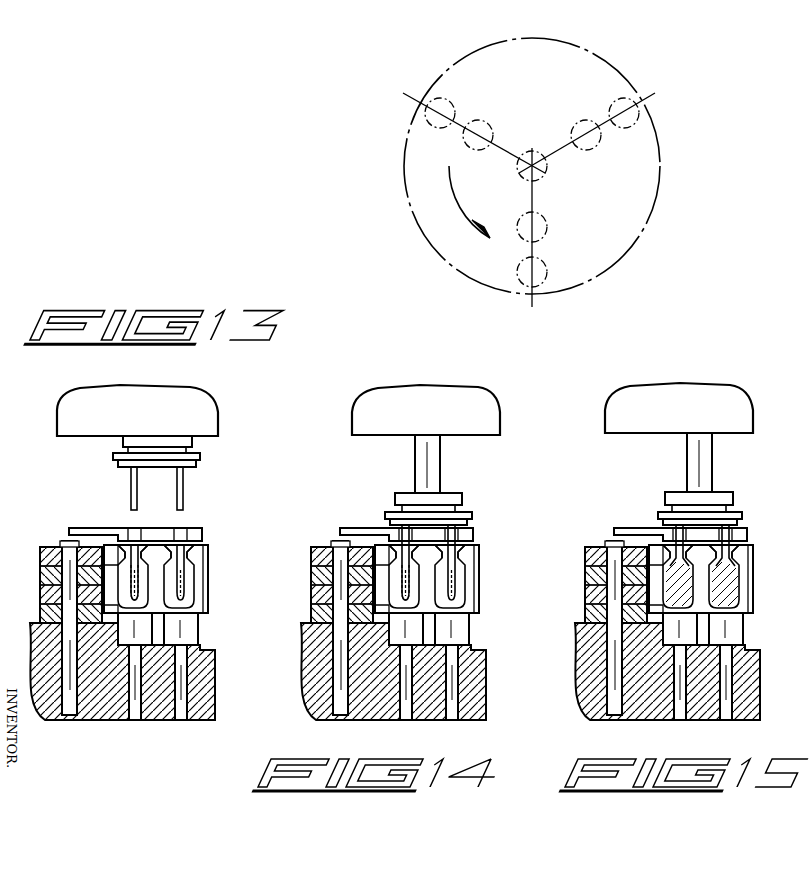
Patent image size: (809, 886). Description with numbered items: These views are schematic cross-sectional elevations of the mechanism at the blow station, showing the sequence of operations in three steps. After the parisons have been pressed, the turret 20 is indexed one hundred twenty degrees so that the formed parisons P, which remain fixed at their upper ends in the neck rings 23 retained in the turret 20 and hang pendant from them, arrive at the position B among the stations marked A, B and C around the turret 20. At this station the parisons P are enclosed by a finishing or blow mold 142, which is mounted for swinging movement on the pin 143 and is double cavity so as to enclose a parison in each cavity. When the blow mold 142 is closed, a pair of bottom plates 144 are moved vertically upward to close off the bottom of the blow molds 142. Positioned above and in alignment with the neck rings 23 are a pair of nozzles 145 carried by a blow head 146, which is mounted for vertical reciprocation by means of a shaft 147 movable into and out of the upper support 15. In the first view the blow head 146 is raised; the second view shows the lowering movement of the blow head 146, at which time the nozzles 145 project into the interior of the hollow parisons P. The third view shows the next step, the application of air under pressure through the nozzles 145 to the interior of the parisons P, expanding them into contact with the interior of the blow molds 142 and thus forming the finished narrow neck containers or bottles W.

In FIG. 13, the upper support 15 is at (206, 407).
In FIG. 14, the upper support 15 is at (482, 407).
In FIG. 15, the upper support 15 is at (745, 360).
In FIG. 14, the shaft 147 is at (437, 461).
In FIG. 15, the shaft 147 is at (711, 458).
In FIG. 13, the blow head 146 is at (116, 458).
In FIG. 14, the blow head 146 is at (469, 513).
In FIG. 15, the blow head 146 is at (741, 513).
In FIG. 13, the nozzles 145 is at (177, 495).
In FIG. 14, the nozzles 145 is at (441, 558).
In FIG. 15, the nozzles 145 is at (679, 557).
In FIG. 13, the pin 143 is at (68, 548).
In FIG. 14, the pin 143 is at (336, 547).
In FIG. 15, the pin 143 is at (607, 547).
In FIG. 13, the neck rings 23 is at (190, 540).
In FIG. 14, the neck rings 23 is at (474, 542).
In FIG. 15, the neck rings 23 is at (744, 542).
In FIG. 12, the turret 20 is at (648, 186).
In FIG. 13, the turret 20 is at (202, 536).
In FIG. 14, the turret 20 is at (350, 530).
In FIG. 15, the turret 20 is at (619, 530).
In FIG. 13, the parisons P is at (137, 583).
In FIG. 14, the parisons P is at (410, 591).
In FIG. 13, the finishing or blow mold 142 is at (205, 592).
In FIG. 14, the finishing or blow mold 142 is at (475, 598).
In FIG. 15, the finishing or blow mold 142 is at (746, 600).
In FIG. 13, the bottom plates 144 is at (133, 634).
In FIG. 14, the bottom plates 144 is at (414, 628).
In FIG. 15, the bottom plates 144 is at (684, 633).
In FIG. 15, the finished narrow neck containers or bottles W is at (688, 588).
In FIG. 12, the station A is at (460, 122).
In FIG. 12, the position B is at (535, 240).
In FIG. 12, the station C is at (603, 122).